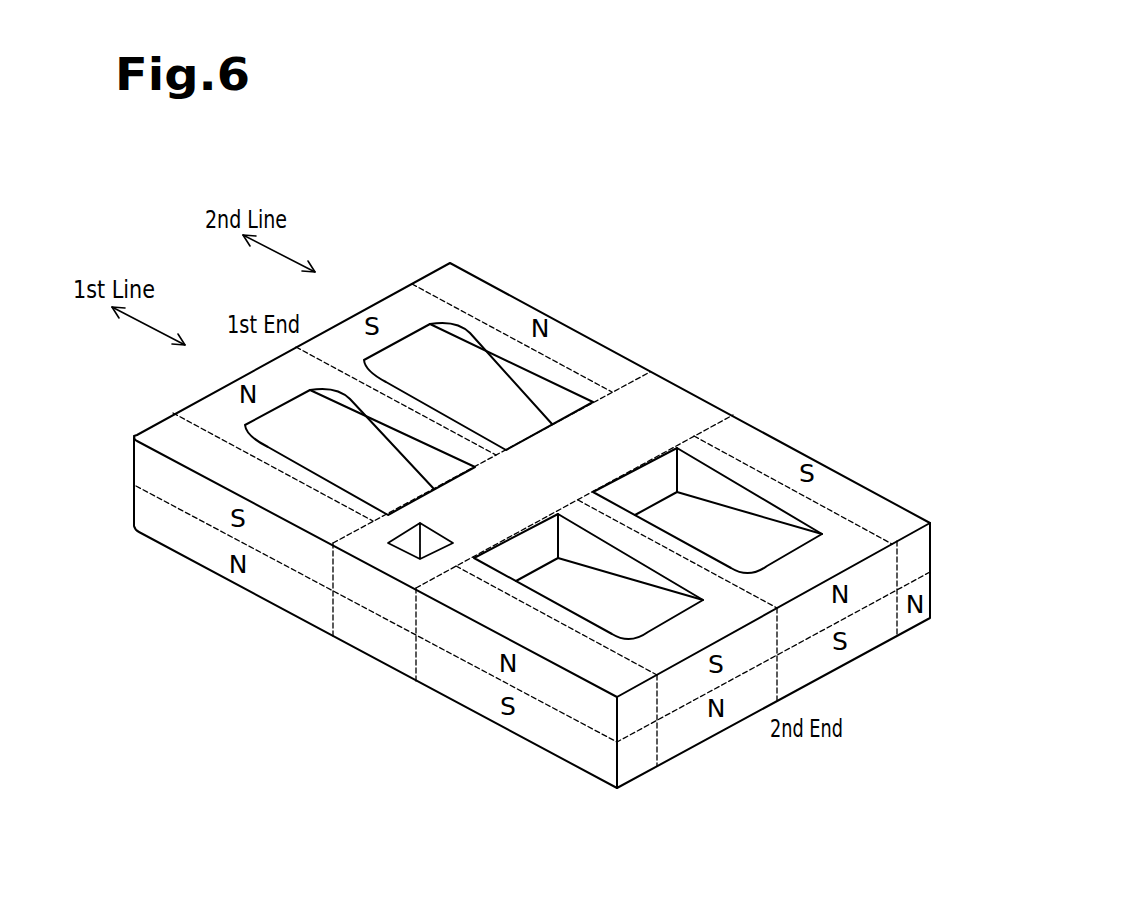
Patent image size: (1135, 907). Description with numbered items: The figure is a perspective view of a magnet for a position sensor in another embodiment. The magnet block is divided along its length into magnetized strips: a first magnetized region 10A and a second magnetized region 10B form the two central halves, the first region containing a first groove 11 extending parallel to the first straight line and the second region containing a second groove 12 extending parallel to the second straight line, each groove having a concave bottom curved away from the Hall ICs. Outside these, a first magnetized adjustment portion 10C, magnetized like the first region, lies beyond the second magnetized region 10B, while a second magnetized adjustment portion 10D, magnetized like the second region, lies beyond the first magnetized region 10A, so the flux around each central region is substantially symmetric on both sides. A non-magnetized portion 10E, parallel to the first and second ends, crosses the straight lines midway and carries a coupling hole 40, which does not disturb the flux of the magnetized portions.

The first magnetized region 10A is at (192, 413).
The second magnetized region 10B is at (400, 303).
The first magnetized adjustment portion 10C is at (597, 352).
The second magnetized adjustment portion 10D is at (286, 603).
The non-magnetized portion 10E is at (683, 397).
The first groove 11 is at (358, 470).
The second groove 12 is at (471, 400).
The coupling hole 40 is at (436, 539).